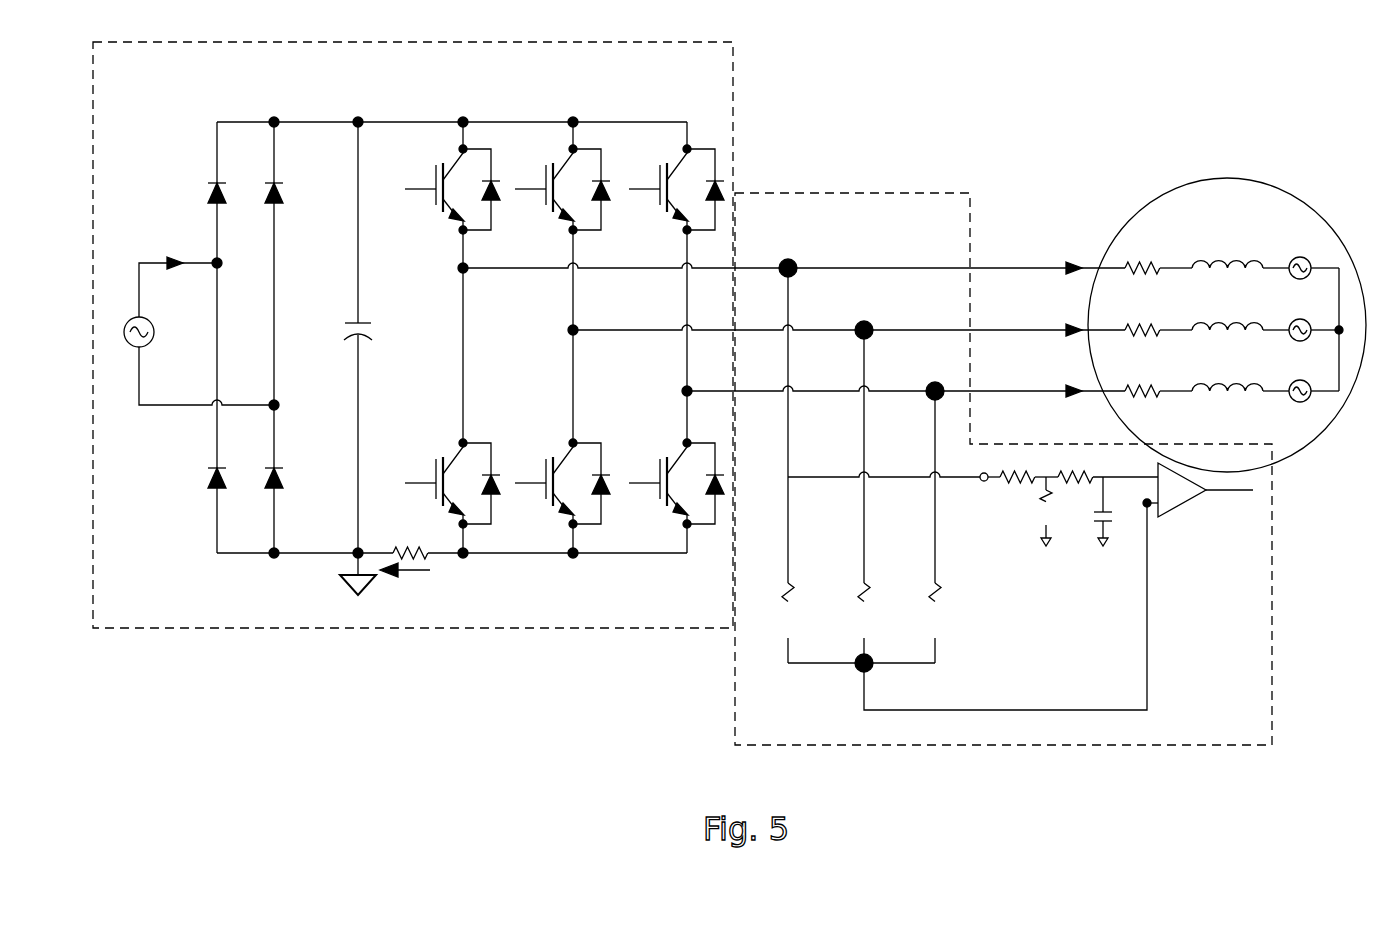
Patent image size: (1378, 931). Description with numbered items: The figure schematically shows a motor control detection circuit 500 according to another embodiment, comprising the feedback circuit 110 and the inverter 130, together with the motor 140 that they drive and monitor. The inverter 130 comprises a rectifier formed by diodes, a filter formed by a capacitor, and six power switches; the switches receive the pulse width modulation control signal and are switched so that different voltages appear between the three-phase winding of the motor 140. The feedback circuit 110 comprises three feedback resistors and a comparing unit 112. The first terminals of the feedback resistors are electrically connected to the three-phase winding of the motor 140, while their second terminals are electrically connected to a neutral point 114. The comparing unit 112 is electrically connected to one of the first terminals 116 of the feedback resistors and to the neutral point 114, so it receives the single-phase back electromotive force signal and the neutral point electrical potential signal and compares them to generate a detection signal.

The motor control detection circuit 500 is at (1281, 800).
The inverter 130 is at (430, 607).
The motor 140 is at (1287, 205).
The feedback circuit 110 is at (1023, 727).
The comparing unit 112 is at (1180, 497).
The neutral point 114 is at (855, 667).
The first terminal 116 is at (788, 477).